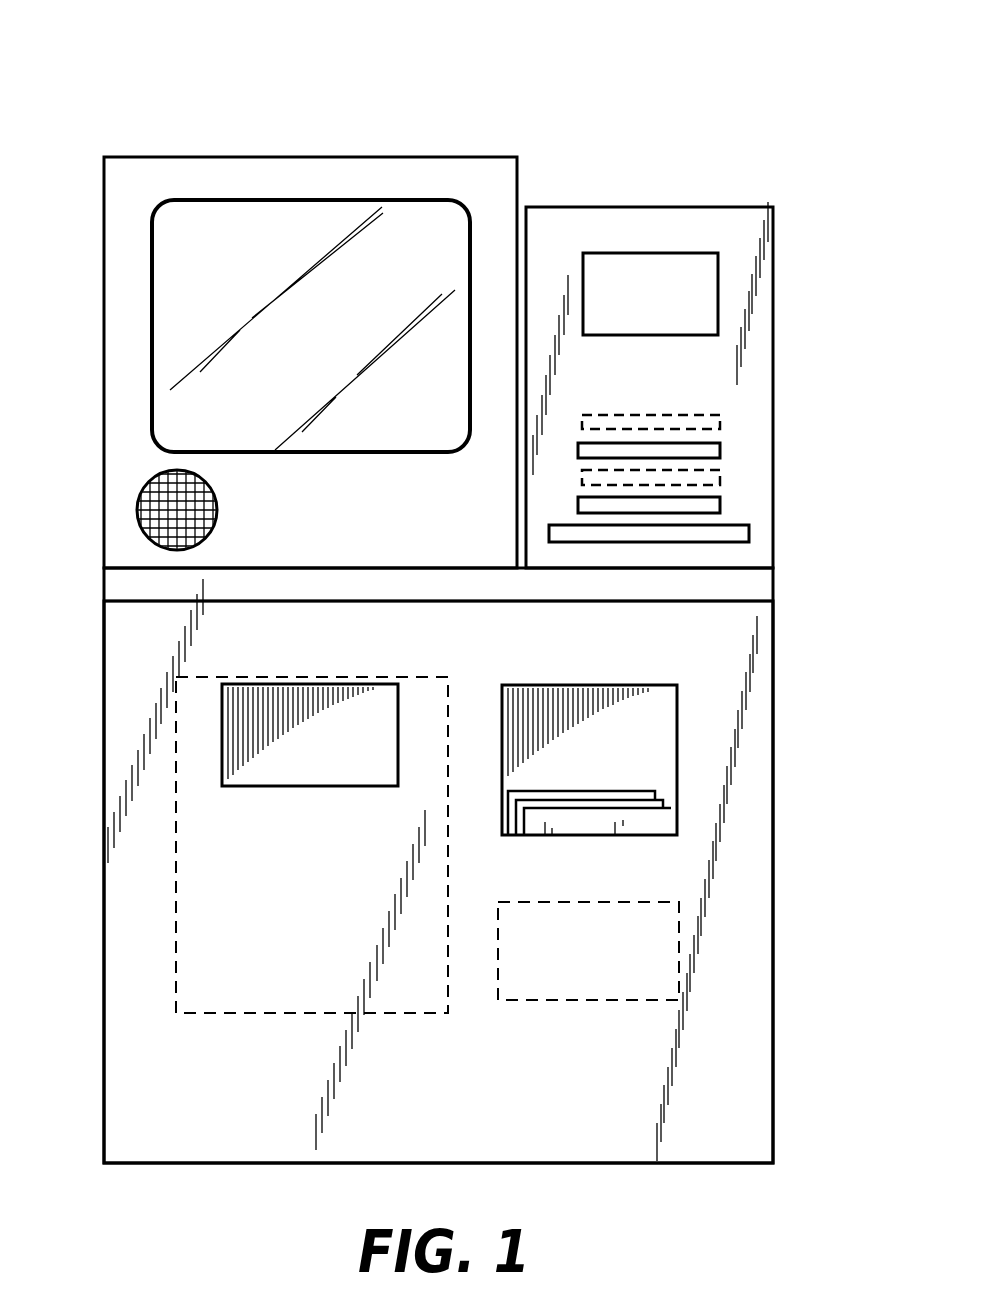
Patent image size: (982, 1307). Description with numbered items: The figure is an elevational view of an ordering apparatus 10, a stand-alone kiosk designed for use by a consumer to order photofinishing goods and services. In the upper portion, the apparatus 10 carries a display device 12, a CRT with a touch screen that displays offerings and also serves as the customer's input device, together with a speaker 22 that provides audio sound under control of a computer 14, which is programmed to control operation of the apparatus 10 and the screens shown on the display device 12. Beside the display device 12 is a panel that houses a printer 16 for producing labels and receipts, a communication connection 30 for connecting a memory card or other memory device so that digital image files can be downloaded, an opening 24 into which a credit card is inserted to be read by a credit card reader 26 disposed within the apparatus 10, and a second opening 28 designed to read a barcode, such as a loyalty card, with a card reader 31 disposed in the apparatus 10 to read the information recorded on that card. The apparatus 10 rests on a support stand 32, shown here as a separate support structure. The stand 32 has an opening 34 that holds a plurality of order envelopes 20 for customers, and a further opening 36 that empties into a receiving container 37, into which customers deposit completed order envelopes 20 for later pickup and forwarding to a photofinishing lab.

The ordering apparatus 10 is at (596, 106).
The display device 12 is at (380, 156).
The computer 14 is at (690, 888).
The printer 16 is at (729, 204).
The order envelope 20 is at (652, 822).
The speaker 22 is at (136, 510).
The opening 24 is at (722, 452).
The credit card reader 26 is at (722, 414).
The second opening 28 is at (722, 505).
The communication connection 30 is at (700, 290).
The card reader 31 is at (722, 478).
The support stand 32 is at (786, 663).
The opening 34 is at (640, 745).
The opening 36 is at (256, 736).
The receiving container 37 is at (176, 884).